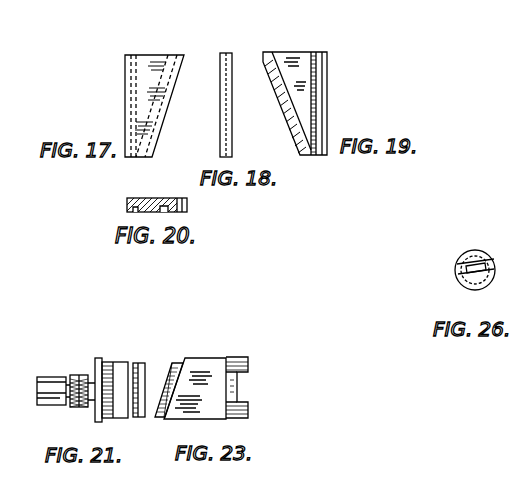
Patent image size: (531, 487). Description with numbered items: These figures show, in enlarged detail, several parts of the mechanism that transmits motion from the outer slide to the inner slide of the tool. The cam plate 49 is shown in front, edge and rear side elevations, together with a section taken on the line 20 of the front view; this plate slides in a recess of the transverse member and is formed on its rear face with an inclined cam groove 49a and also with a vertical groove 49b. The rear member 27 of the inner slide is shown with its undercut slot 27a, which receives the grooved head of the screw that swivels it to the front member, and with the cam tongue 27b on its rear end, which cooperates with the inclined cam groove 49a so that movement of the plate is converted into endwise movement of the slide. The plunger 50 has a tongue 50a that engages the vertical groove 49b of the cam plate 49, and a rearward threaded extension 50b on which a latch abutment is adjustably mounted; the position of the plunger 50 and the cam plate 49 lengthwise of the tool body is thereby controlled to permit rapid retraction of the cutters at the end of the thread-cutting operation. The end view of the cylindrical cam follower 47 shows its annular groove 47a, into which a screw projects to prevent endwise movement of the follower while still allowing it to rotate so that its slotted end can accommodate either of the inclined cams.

In FIG. 17, the cam plate 49 is at (157, 56).
In FIG. 18, the cam plate 49 is at (227, 53).
In FIG. 19, the cam plate 49 is at (301, 54).
In FIG. 17, the inclined cam groove 49a is at (160, 104).
In FIG. 19, the inclined cam groove 49a is at (289, 100).
In FIG. 17, the vertical groove 49b is at (131, 106).
In FIG. 19, the vertical groove 49b is at (316, 100).
In FIG. 17, the section line 20 is at (125, 100).
In FIG. 26, the cam follower 47 is at (480, 252).
In FIG. 26, the annular groove 47a is at (462, 256).
In FIG. 21, the plunger 50 is at (98, 360).
In FIG. 21, the tongue 50a is at (139, 364).
In FIG. 21, the rearward threaded extension 50b is at (75, 376).
In FIG. 23, the rear member 27 is at (206, 364).
In FIG. 23, the undercut slot 27a is at (240, 385).
In FIG. 23, the cam tongue 27b is at (170, 376).